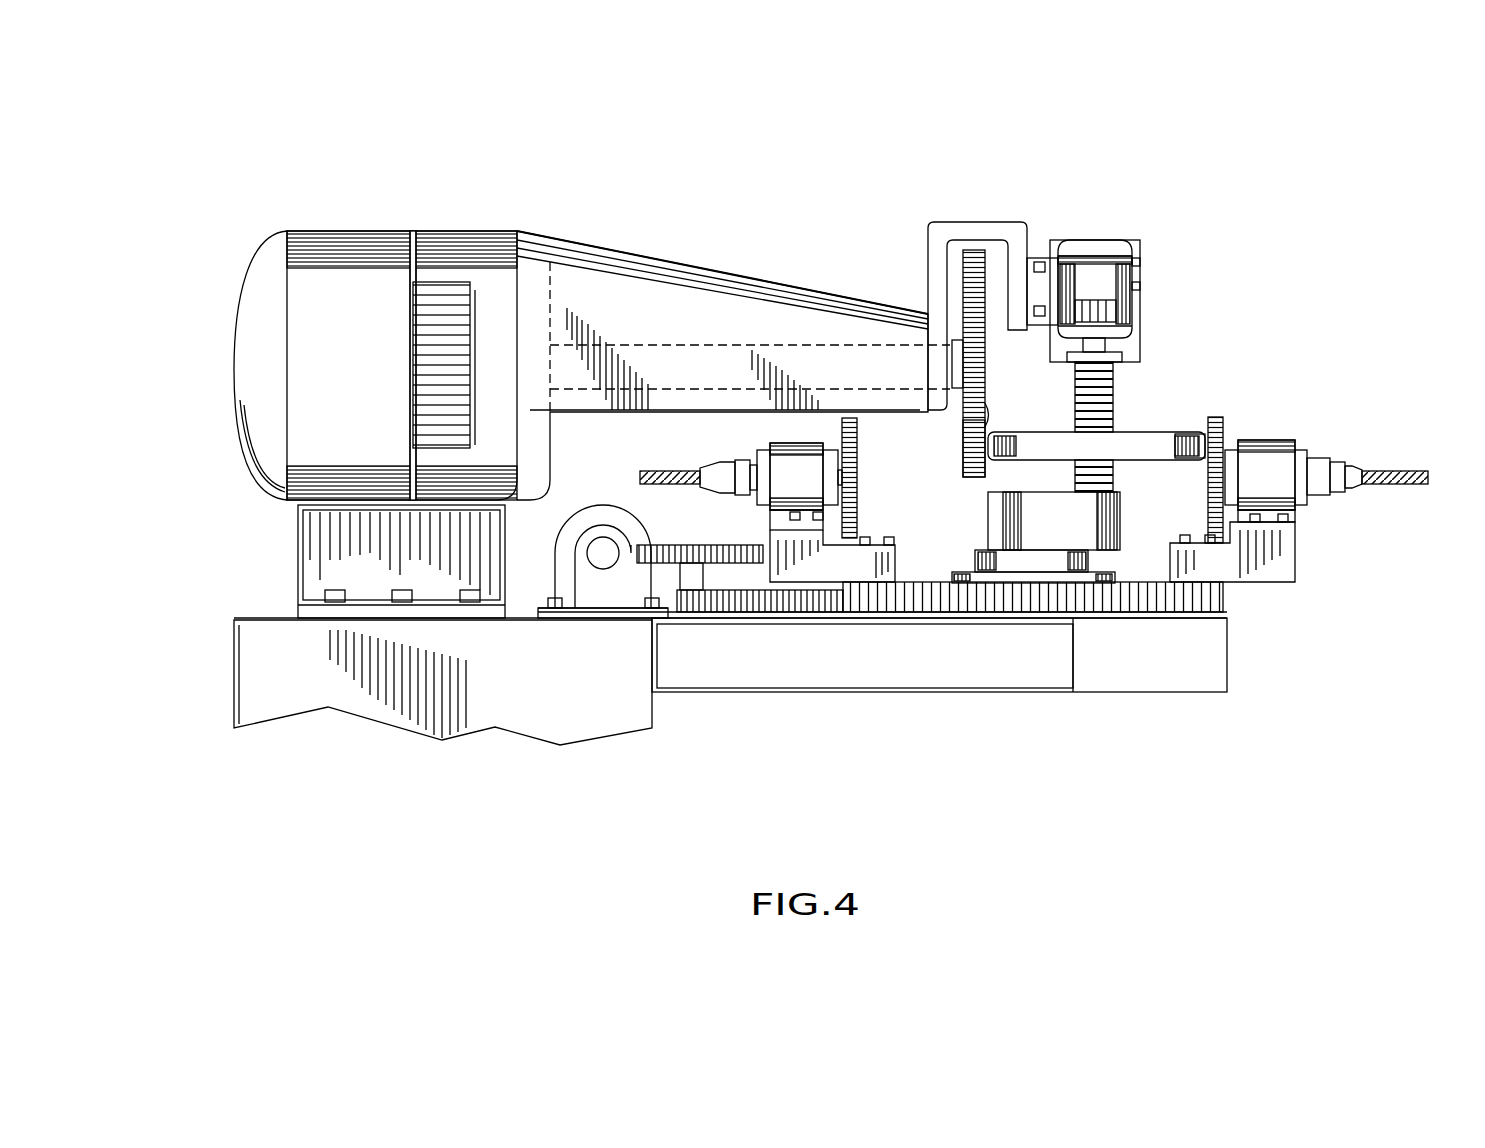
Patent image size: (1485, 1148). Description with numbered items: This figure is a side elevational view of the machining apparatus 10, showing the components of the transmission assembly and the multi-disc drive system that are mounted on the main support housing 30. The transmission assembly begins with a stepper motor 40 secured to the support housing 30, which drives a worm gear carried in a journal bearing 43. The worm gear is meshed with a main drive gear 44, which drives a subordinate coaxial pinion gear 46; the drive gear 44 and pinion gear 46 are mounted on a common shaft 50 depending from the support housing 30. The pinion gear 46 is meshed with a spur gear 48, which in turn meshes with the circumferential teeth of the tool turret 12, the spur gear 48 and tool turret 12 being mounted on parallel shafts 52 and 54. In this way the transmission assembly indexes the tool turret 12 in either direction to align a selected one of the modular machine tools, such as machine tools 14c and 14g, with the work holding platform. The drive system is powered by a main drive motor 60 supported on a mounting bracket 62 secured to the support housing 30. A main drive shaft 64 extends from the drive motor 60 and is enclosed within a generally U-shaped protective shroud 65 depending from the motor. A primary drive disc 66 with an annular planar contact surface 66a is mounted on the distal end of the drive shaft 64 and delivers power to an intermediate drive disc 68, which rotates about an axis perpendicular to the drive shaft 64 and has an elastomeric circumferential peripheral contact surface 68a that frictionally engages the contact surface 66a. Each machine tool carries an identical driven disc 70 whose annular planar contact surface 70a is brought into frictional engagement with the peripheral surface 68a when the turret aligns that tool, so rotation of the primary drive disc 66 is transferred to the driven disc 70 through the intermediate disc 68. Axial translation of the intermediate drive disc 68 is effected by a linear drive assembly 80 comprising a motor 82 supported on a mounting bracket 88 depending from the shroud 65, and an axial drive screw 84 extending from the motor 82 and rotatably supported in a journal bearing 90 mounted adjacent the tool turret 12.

The machining apparatus 10 is at (880, 178).
The tool turret 12 is at (928, 600).
The modular machine tool 14c is at (1390, 478).
The modular machine tool 14g is at (655, 475).
The main support housing 30 is at (272, 708).
The stepper motor 40 is at (595, 515).
The journal bearing 43 is at (598, 605).
The main drive gear 44 is at (672, 548).
The pinion gear 46 is at (700, 580).
The spur gear 48 is at (818, 605).
The common shaft 50 is at (697, 580).
The shaft 52 is at (780, 605).
The shaft 54 is at (1045, 600).
The main drive motor 60 is at (238, 295).
The mounting bracket 62 is at (312, 558).
The main drive shaft 64 is at (728, 343).
The protective shroud 65 is at (598, 240).
The primary drive disc 66 is at (975, 305).
The annular planar contact surface 66a is at (975, 425).
The intermediate drive disc 68 is at (1155, 430).
The circumferential peripheral contact surface 68a is at (1218, 440).
The driven disc 70 is at (1218, 455).
The annular planar contact surface 70a is at (1200, 560).
The linear drive assembly 80 is at (1150, 277).
The motor 82 is at (1110, 240).
The axial drive screw 84 is at (1120, 385).
The mounting bracket 88 is at (1045, 262).
The journal bearing 90 is at (1130, 580).